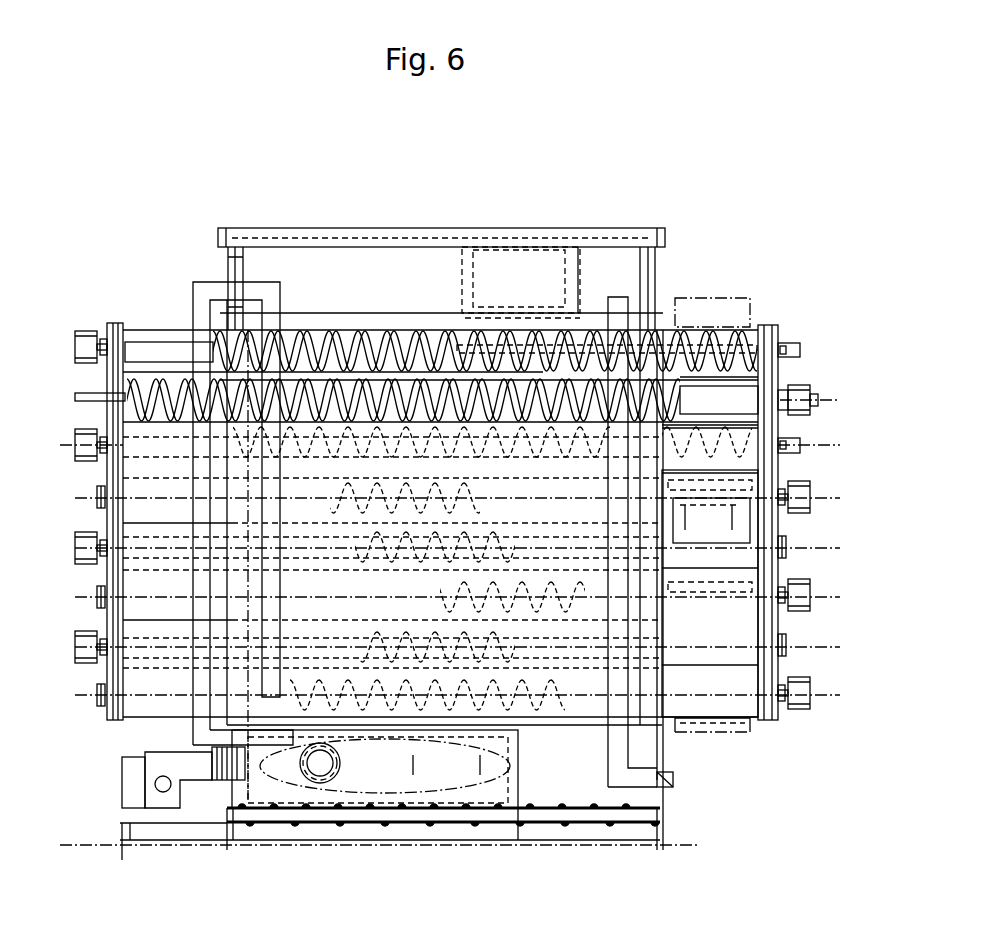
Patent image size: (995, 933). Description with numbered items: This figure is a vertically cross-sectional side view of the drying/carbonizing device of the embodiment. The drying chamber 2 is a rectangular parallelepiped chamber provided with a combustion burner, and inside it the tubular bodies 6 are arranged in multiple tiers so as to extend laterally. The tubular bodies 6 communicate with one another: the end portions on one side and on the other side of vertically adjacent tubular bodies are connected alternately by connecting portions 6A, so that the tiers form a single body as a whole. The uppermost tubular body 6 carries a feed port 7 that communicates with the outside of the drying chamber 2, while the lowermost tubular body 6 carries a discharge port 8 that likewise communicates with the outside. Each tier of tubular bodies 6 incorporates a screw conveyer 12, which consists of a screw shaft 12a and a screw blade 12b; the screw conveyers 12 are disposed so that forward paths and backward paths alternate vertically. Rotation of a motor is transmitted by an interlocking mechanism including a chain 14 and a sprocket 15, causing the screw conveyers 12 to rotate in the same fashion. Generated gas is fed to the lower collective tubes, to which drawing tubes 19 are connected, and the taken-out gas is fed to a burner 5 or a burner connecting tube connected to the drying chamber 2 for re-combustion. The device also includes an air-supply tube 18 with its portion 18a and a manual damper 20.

The drying chamber 2 is at (543, 770).
The burner 5 is at (357, 767).
The tubular body 6 is at (400, 330).
The connecting portion 6A is at (712, 378).
The feed port 7 is at (703, 310).
The discharge port 8 is at (728, 735).
The screw conveyer 12 is at (416, 434).
The screw shaft 12a is at (347, 347).
The screw blade 12b is at (392, 395).
The chain 14 is at (797, 387).
The sprocket 15 is at (810, 396).
The air-supply tube 18 is at (622, 637).
The support leg 18a is at (662, 790).
The drawing tube 19 is at (270, 602).
The manual damper 20 is at (673, 776).